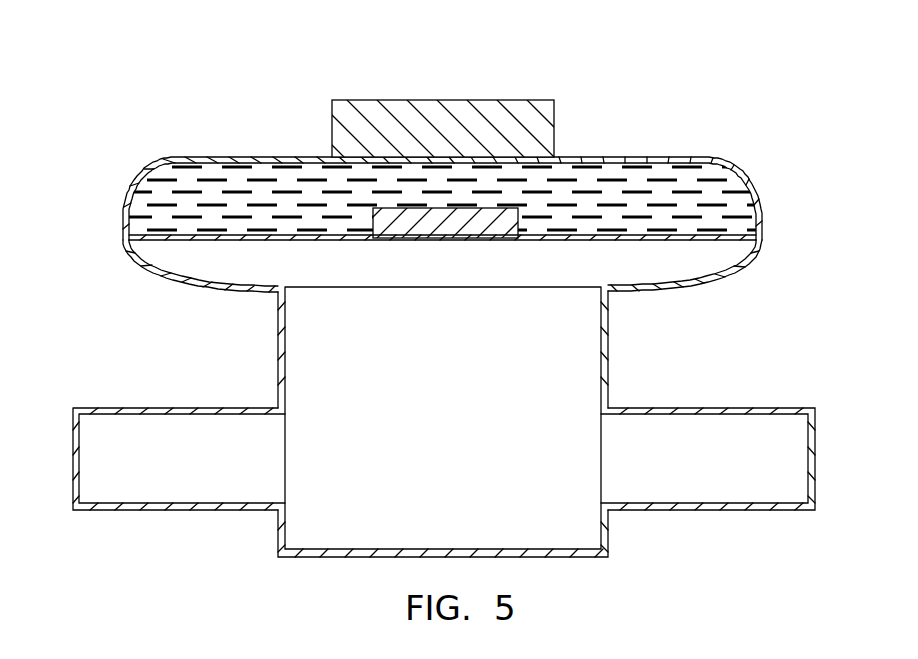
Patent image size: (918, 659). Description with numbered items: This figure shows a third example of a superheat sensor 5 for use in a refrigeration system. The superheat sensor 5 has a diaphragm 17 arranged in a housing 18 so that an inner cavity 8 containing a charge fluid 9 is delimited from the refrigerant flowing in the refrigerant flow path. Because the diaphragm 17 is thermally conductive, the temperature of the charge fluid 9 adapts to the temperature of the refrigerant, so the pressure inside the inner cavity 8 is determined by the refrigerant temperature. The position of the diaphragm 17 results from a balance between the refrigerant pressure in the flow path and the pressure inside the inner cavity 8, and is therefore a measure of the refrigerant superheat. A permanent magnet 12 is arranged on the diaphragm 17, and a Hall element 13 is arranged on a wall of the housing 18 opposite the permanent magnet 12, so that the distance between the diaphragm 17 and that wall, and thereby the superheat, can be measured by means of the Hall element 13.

The superheat sensor 5 is at (443, 285).
The inner cavity 8 is at (723, 192).
The charge fluid 9 is at (667, 182).
The permanent magnet 12 is at (512, 238).
The Hall element 13 is at (373, 108).
The diaphragm 17 is at (637, 244).
The housing 18 is at (757, 258).